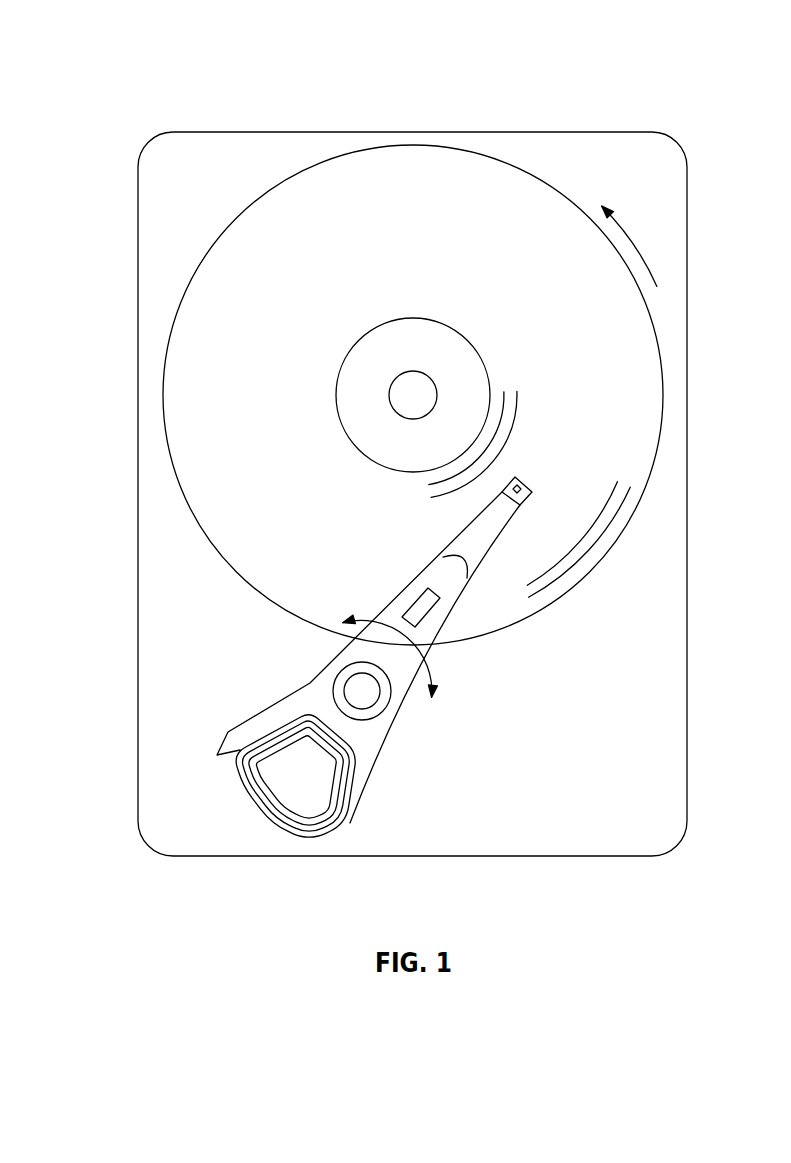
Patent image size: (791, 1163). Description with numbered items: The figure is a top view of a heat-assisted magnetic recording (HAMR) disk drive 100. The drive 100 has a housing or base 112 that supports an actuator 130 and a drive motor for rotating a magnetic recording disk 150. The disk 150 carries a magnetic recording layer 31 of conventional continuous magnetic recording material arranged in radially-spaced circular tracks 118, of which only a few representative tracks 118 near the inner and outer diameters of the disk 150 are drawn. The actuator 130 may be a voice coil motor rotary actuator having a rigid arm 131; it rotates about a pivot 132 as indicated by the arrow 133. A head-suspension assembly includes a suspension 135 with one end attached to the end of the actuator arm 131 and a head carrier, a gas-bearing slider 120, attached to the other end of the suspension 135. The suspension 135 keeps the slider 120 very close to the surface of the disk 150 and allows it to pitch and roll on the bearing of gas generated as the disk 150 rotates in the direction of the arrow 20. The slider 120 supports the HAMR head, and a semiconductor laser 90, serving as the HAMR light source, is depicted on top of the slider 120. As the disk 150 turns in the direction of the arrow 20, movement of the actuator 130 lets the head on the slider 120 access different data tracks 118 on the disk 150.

The HAMR disk drive 100 is at (139, 59).
The housing or base 112 is at (620, 133).
The disk 150 is at (447, 395).
The magnetic recording layer 31 is at (660, 352).
The arrow 20 is at (632, 232).
The tracks 118 is at (498, 390).
The actuator 130 is at (218, 752).
The suspension 135 is at (452, 545).
The pivot 132 is at (355, 686).
The semiconductor laser 90 is at (527, 490).
The gas-bearing slider 120 is at (524, 497).
The rigid arm 131 is at (402, 603).
The arrow 133 is at (430, 675).